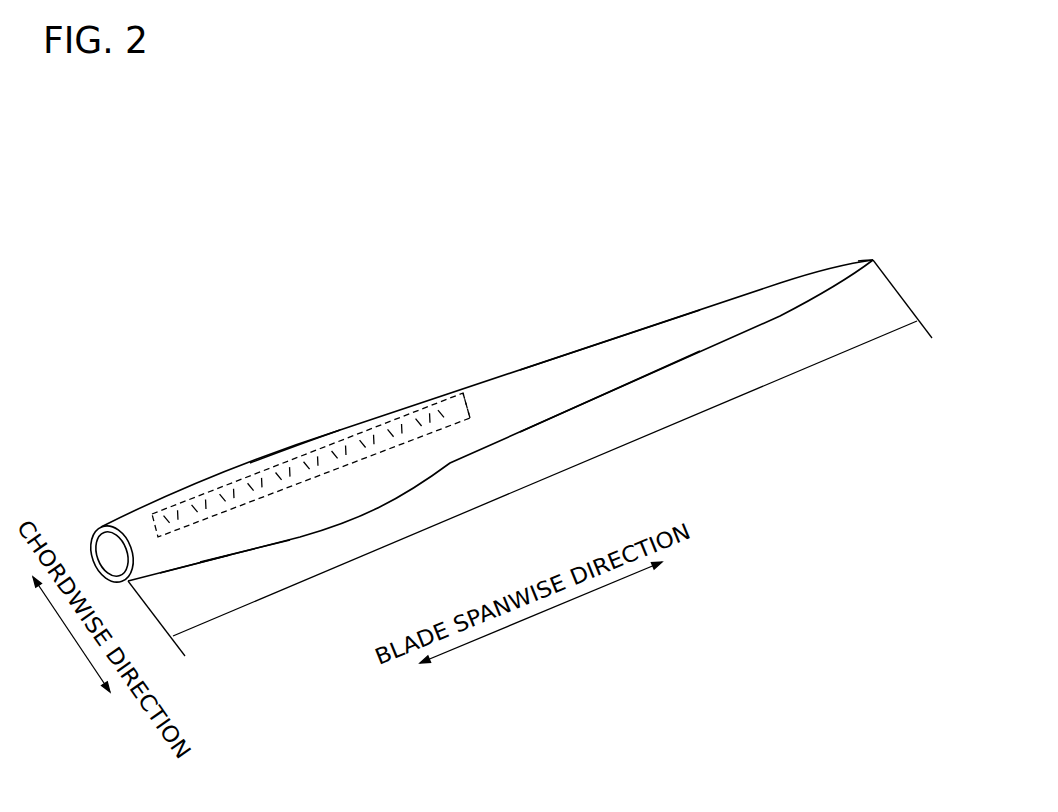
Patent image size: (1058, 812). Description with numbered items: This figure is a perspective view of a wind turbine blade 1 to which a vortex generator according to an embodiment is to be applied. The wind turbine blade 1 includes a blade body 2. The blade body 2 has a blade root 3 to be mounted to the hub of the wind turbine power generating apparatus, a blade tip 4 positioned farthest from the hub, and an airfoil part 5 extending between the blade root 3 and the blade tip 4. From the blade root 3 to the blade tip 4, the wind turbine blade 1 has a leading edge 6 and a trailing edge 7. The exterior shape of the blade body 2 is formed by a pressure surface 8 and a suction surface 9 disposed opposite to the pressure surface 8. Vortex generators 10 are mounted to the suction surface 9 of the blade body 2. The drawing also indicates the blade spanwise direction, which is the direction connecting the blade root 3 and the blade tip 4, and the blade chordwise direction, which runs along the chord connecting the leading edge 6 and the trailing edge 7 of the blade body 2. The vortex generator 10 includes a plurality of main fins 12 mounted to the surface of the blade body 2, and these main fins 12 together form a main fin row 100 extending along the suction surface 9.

The wind turbine blade 1 is at (246, 219).
The blade body 2 is at (690, 322).
The blade root 3 is at (98, 527).
The blade tip 4 is at (872, 258).
The airfoil part 5 is at (308, 441).
The leading edge 6 is at (584, 349).
The trailing edge 7 is at (586, 402).
The pressure surface 8 is at (187, 540).
The suction surface 9 is at (223, 537).
The vortex generator 10 is at (450, 423).
The main fin 12 is at (225, 495).
The main fin row 100 is at (311, 447).